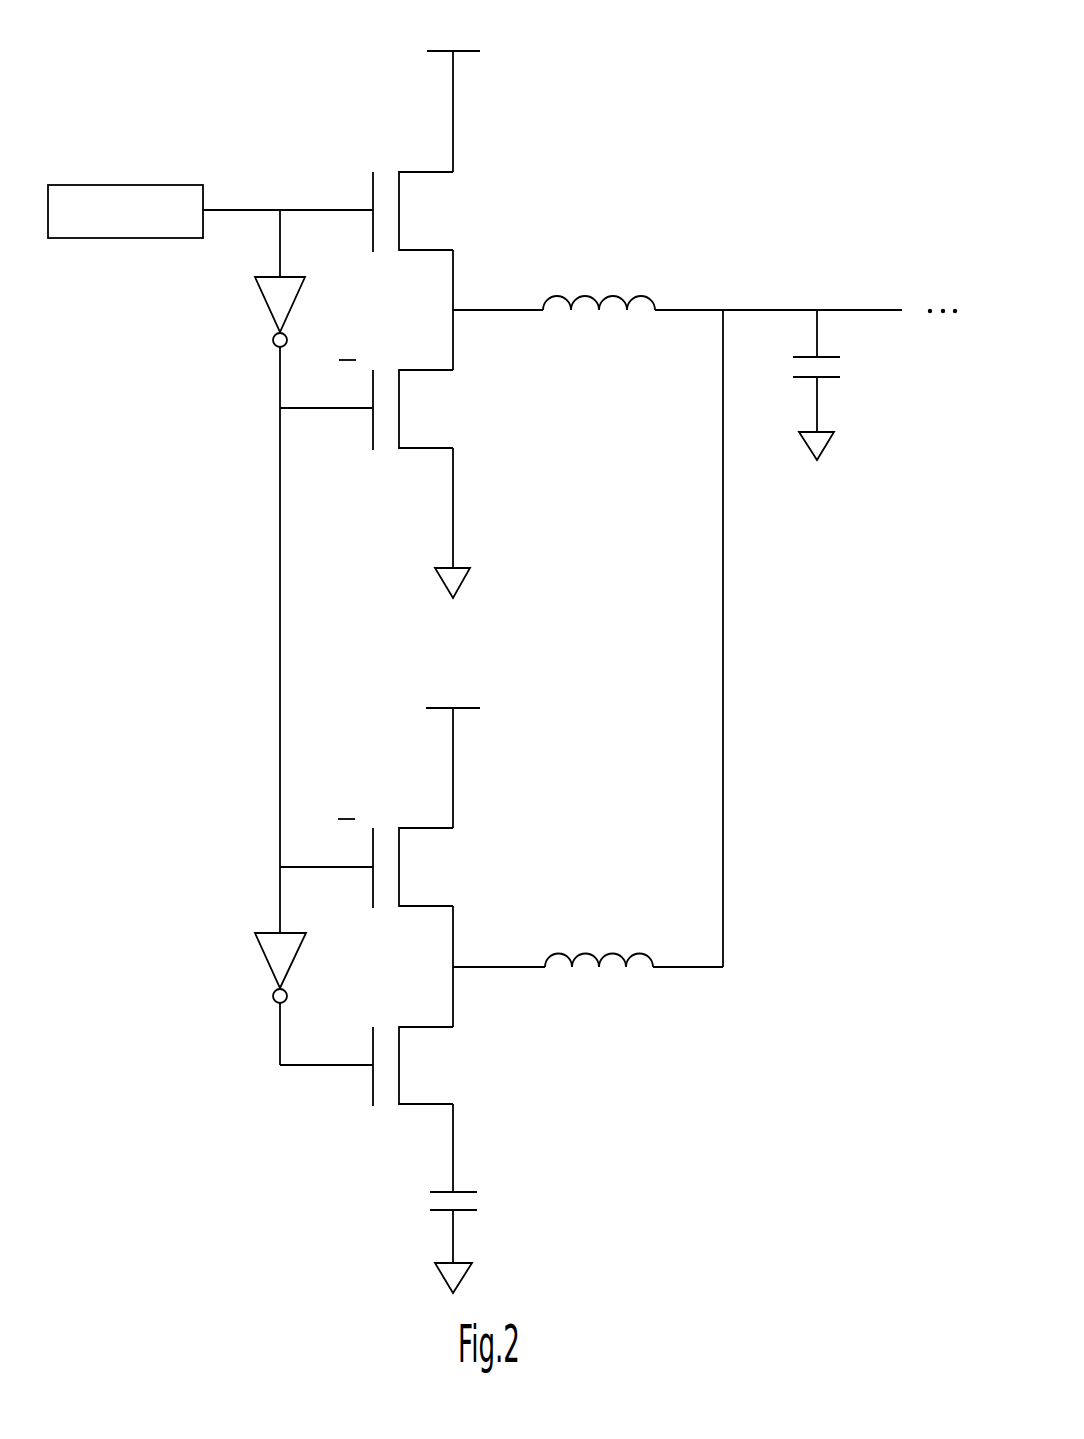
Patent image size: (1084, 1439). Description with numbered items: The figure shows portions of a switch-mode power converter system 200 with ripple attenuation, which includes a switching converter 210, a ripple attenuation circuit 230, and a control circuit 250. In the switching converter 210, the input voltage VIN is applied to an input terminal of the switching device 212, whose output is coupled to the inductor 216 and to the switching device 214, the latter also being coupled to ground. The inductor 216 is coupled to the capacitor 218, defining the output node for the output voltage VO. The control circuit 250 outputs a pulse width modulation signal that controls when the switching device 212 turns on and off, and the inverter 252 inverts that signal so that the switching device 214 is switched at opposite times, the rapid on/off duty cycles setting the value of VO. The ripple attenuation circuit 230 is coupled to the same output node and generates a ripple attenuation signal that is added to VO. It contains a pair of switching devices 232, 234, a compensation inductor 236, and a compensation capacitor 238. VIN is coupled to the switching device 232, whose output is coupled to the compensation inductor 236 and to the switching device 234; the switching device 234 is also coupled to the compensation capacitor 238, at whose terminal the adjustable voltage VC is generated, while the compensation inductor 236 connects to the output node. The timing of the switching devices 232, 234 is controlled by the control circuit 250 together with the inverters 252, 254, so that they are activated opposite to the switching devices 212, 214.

The switch-mode power converter system 200 is at (848, 43).
The switching converter 210 is at (588, 299).
The switching device 212 is at (373, 238).
The switching device 214 is at (373, 437).
The inductor L1 216 is at (656, 301).
The capacitor 218 is at (842, 369).
The ripple attenuation circuit 230 is at (495, 975).
The switching device 232 is at (372, 896).
The switching device 234 is at (372, 1093).
The inductor LC 236 is at (653, 957).
The capacitor CC 238 is at (478, 1202).
The control circuit 250 is at (125, 185).
The inverter 252 is at (268, 309).
The inverter 254 is at (268, 964).